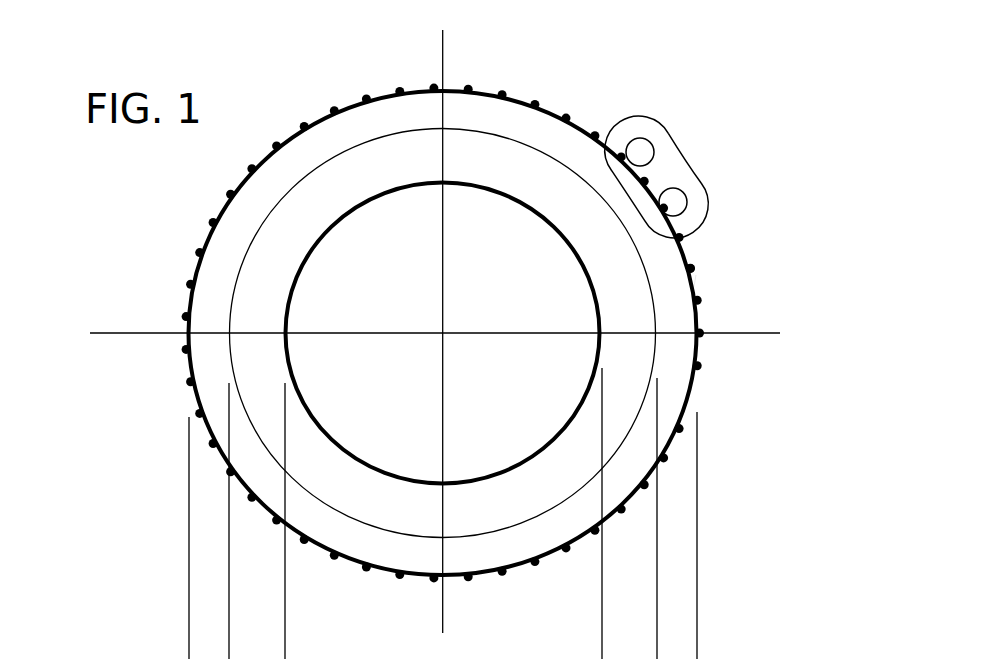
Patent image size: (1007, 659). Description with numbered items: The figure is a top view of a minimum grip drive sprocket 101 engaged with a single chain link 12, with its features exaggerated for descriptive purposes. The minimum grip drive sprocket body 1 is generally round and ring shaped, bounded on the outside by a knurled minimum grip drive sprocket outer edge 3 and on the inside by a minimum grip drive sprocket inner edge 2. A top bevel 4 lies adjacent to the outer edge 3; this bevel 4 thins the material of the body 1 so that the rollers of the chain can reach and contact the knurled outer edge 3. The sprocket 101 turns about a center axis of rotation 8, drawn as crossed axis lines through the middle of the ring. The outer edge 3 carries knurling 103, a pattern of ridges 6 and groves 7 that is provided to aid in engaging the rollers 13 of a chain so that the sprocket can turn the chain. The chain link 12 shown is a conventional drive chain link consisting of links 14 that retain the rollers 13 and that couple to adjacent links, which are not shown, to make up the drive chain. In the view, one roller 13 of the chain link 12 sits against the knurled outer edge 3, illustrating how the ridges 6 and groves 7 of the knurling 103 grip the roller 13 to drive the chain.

The minimum grip drive sprocket body 1 is at (318, 198).
The minimum grip drive sprocket inner edge 2 is at (326, 423).
The minimum grip drive sprocket outer edge 3 is at (193, 395).
The top bevel 4 is at (403, 112).
The ridge 6 is at (698, 267).
The grove 7 is at (698, 291).
The center axis of rotation 8 is at (443, 333).
The chain link 12 is at (732, 129).
The roller 13 is at (637, 153).
The link 14 is at (665, 172).
The minimum grip drive sprocket 101 is at (722, 505).
The knurling 103 is at (539, 333).